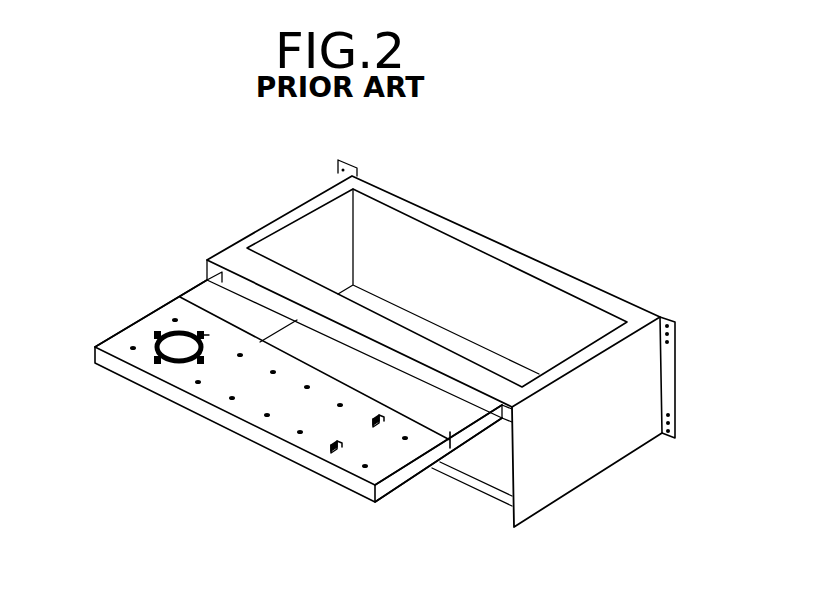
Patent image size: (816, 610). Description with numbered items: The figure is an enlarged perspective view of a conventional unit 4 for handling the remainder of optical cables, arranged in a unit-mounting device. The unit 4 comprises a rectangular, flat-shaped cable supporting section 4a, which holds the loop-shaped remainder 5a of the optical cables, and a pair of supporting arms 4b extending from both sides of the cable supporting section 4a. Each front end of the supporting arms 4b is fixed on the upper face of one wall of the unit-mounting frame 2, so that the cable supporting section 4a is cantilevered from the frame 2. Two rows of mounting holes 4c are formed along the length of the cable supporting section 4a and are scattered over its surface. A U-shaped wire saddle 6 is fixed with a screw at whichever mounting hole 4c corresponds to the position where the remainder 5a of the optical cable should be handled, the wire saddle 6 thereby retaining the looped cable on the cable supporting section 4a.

The unit-mounting frame 2 is at (482, 278).
The unit for handling the remainder of optical cables 4 is at (148, 316).
The cable supporting section 4a is at (397, 482).
The supporting arms 4b is at (187, 288).
The mounting holes 4c is at (268, 415).
The remainder of the optical cables 5a is at (159, 363).
The wire saddle 6 is at (332, 453).